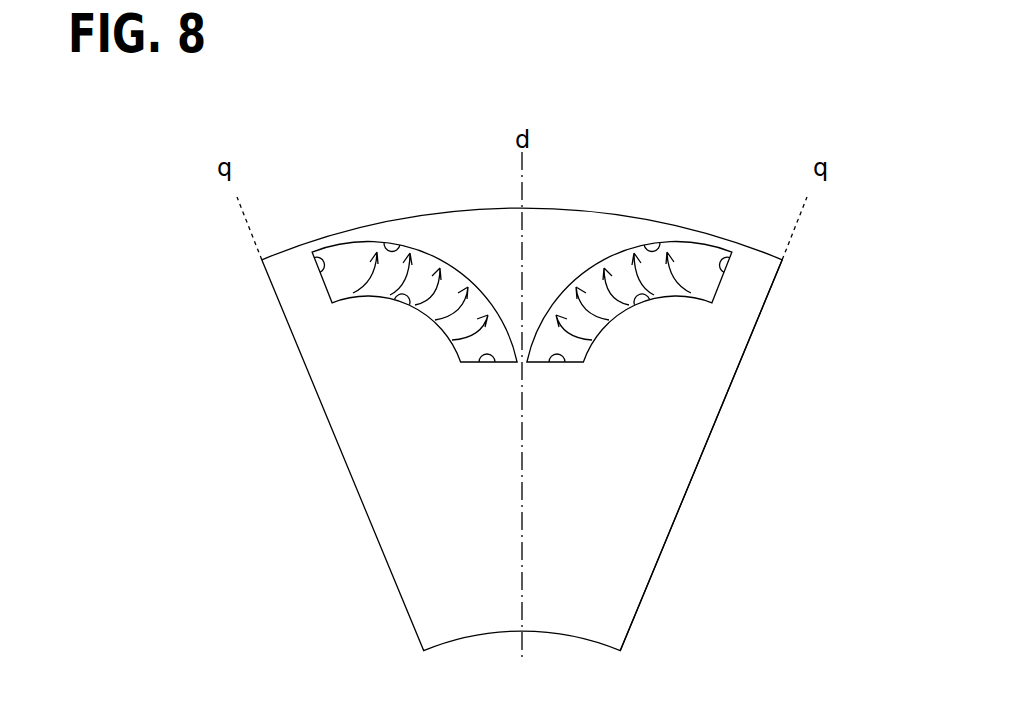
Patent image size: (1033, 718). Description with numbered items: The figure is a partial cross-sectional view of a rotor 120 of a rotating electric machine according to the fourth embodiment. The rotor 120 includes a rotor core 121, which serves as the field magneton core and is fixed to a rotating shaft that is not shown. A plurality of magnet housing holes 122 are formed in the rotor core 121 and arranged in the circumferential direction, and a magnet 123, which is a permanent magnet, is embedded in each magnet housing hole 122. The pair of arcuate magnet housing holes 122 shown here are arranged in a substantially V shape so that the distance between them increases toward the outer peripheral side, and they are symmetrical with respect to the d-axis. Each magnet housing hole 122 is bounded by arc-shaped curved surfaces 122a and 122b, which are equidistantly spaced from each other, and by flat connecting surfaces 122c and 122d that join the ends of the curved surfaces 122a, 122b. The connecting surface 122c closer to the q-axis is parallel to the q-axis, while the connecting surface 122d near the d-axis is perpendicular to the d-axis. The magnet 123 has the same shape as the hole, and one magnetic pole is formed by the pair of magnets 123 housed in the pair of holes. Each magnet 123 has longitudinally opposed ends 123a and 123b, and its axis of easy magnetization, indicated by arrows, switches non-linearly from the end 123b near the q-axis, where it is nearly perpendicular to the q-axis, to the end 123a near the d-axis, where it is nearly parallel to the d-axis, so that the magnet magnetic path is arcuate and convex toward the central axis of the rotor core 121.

The rotor 120 is at (739, 209).
The rotor core 121 is at (690, 483).
The magnet housing hole 122 is at (452, 272).
The curved surface 122a is at (388, 243).
The curved surface 122b is at (403, 304).
The connecting surface 122c is at (318, 270).
The connecting surface 122d is at (487, 363).
The magnet 123 is at (456, 333).
The end 123a is at (530, 364).
The end 123b is at (716, 301).